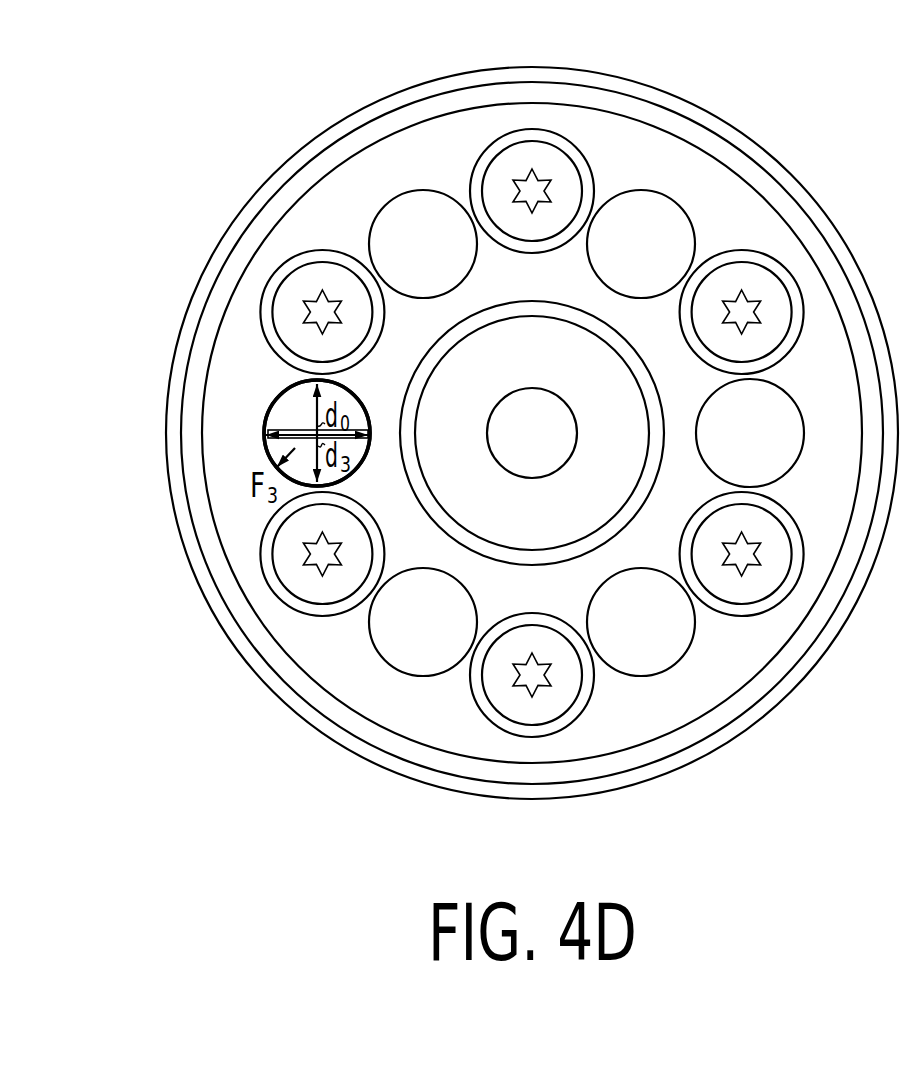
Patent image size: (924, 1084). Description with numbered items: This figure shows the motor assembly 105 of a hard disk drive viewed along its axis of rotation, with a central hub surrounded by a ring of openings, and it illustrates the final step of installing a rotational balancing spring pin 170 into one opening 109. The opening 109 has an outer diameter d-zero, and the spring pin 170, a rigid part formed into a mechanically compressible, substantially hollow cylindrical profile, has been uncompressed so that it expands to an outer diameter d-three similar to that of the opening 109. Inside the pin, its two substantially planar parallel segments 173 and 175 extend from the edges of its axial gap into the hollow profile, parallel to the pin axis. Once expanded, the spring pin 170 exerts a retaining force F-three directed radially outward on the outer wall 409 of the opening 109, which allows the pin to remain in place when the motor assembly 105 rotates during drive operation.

The motor assembly 105 is at (255, 95).
The opening 109 is at (275, 386).
The rotational balancing spring pin 170 is at (258, 411).
The substantially planar parallel segment 173 is at (293, 437).
The substantially planar parallel segment 175 is at (290, 427).
The outer wall 409 is at (340, 480).